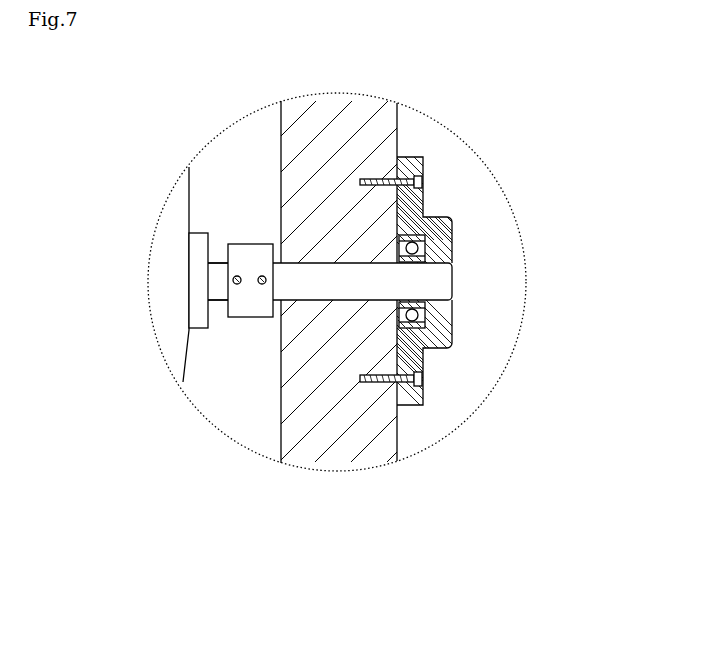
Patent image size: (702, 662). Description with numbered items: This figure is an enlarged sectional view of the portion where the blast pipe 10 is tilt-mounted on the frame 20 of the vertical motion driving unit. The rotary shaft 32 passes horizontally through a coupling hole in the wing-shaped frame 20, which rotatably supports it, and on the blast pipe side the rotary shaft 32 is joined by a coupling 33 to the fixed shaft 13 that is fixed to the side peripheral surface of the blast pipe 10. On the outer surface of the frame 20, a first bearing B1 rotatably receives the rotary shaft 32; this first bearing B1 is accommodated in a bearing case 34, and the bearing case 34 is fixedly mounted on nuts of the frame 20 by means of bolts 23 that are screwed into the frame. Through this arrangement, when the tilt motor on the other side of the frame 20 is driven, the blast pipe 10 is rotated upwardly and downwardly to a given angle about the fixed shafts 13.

The blast pipe 10 is at (172, 240).
The fixed shaft 13 is at (218, 290).
The frame 20 is at (340, 425).
The bolt 23 is at (427, 382).
The rotary shaft 32 is at (437, 283).
The coupling 33 is at (255, 250).
The bearing case 34 is at (453, 330).
The first bearing B1 is at (435, 212).